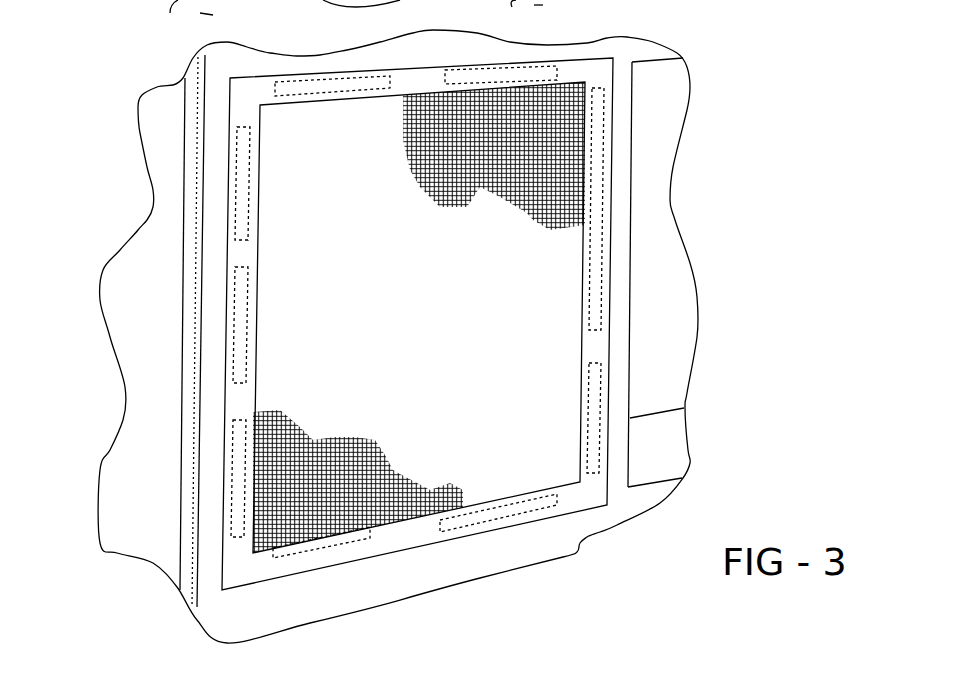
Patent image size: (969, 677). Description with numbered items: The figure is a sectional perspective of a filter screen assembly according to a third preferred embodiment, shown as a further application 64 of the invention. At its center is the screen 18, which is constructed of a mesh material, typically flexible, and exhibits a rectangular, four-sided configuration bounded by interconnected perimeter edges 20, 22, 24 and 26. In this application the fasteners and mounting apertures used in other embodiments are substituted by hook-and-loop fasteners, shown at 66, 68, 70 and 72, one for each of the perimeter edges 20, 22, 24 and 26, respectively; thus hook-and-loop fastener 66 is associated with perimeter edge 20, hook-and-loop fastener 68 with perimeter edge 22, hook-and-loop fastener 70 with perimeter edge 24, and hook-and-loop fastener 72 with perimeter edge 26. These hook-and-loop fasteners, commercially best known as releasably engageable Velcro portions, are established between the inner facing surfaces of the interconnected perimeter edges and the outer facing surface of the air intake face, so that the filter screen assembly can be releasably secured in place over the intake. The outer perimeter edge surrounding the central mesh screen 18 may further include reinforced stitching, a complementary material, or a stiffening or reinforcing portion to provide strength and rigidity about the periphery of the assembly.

The screen 18 is at (393, 300).
The perimeter edge 20 is at (600, 207).
The perimeter edge 22 is at (413, 537).
The perimeter edge 24 is at (233, 402).
The perimeter edge 26 is at (412, 83).
The further application 64 is at (100, 128).
The hook-and-loop fastener 66 is at (593, 295).
The hook-and-loop fastener 68 is at (370, 543).
The hook-and-loop fastener 70 is at (245, 424).
The hook-and-loop fastener 72 is at (470, 88).